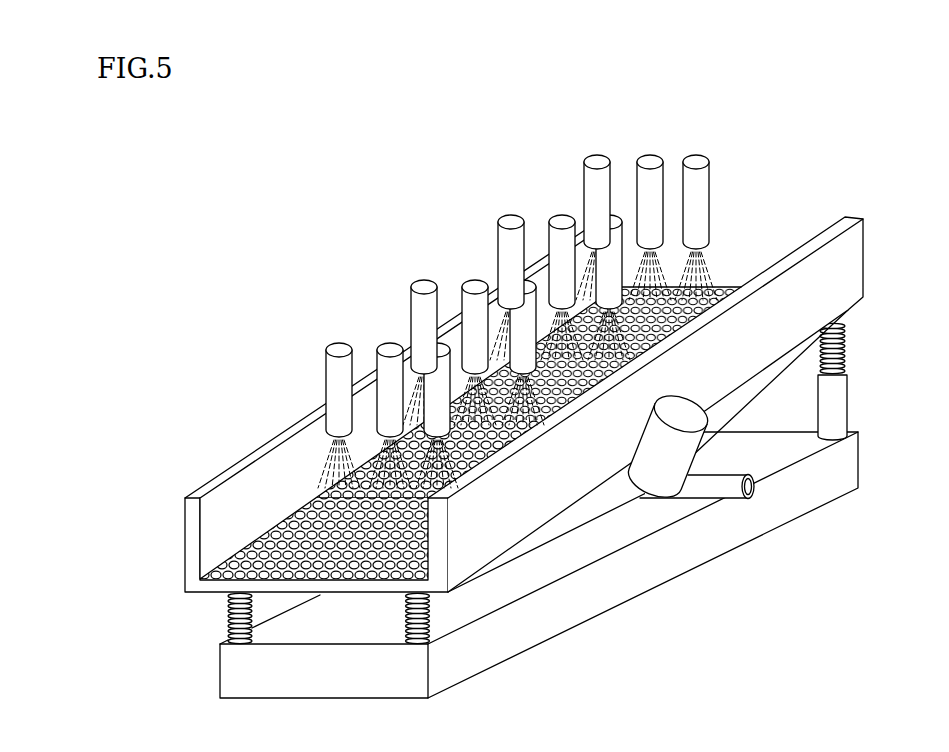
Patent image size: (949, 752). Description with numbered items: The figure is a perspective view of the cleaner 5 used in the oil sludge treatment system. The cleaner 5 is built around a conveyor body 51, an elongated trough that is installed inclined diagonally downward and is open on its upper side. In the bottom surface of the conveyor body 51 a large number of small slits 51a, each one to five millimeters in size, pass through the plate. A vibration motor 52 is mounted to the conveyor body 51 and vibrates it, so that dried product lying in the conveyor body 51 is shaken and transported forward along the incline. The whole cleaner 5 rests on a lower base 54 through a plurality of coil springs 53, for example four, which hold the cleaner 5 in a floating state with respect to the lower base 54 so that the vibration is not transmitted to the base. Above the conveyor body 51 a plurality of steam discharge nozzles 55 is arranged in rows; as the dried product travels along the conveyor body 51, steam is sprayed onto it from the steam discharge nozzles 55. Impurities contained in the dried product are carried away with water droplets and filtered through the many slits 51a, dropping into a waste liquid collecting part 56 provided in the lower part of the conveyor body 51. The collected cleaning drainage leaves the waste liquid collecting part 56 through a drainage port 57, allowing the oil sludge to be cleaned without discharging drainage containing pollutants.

The cleaner 5 is at (487, 213).
The conveyor body 51 is at (272, 475).
The slits 51a is at (235, 560).
The vibration motor 52 is at (670, 462).
The coil springs 53 is at (228, 615).
The lower base 54 is at (735, 532).
The steam discharge nozzles 55 is at (693, 178).
The waste liquid collecting part 56 is at (570, 518).
The drainage port 57 is at (760, 490).